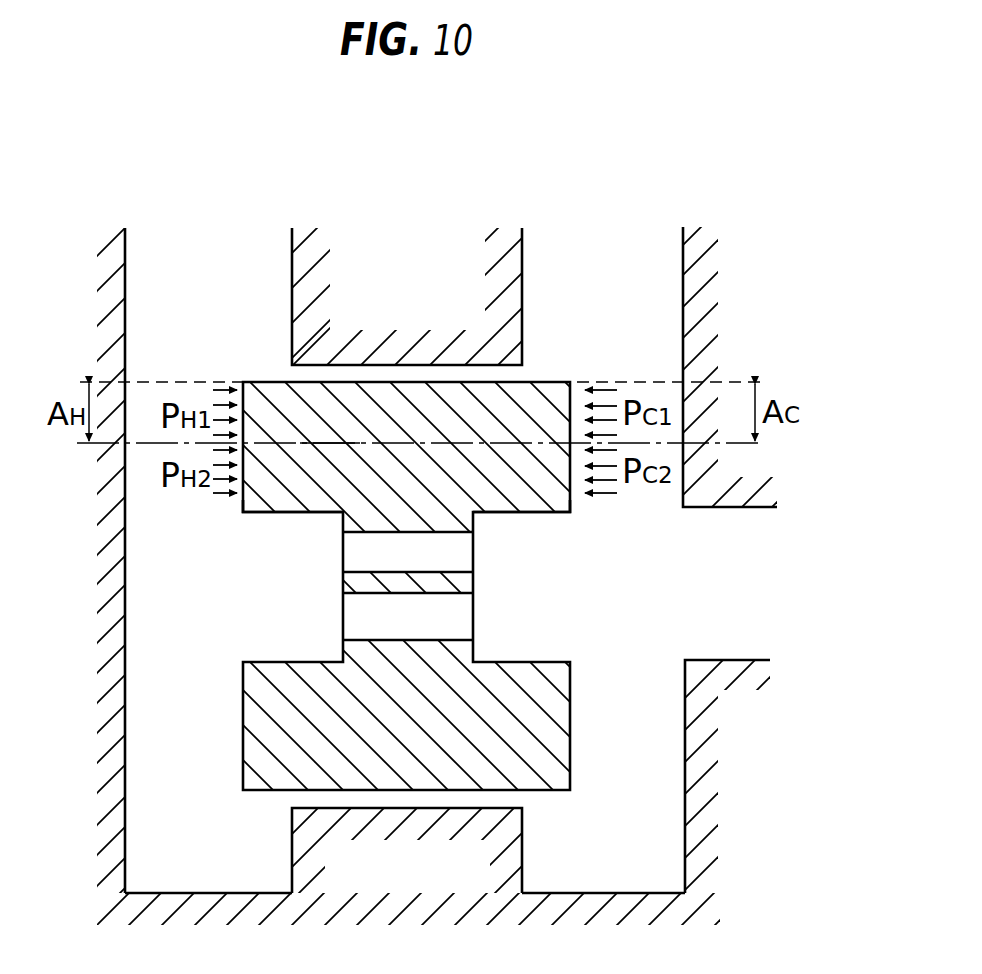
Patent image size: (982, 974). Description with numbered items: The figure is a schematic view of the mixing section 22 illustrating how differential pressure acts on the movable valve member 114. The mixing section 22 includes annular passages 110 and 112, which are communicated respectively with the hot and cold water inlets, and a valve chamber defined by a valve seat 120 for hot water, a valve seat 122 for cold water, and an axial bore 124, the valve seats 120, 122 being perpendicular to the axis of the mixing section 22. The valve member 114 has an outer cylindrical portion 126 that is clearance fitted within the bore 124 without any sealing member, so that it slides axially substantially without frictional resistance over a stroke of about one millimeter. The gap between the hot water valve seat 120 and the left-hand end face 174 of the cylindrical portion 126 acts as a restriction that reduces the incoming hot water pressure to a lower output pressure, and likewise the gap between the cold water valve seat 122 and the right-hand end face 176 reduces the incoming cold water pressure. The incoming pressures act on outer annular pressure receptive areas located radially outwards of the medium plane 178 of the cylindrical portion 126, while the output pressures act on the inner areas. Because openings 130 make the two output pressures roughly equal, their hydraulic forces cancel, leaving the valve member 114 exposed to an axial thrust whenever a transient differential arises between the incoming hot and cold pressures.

The mixing section 22 is at (223, 233).
The annular passage 110 is at (215, 284).
The annular passage 112 is at (618, 283).
The movable valve member 114 is at (579, 751).
The valve seat for hot water 120 is at (120, 511).
The valve seat for cold water 122 is at (684, 498).
The axial bore 124 is at (393, 808).
The outer cylindrical portion 126 is at (410, 435).
The openings 130 is at (427, 568).
The left-hand end face 174 is at (243, 500).
The right-hand end face 176 is at (572, 495).
The medium plane 178 is at (330, 443).